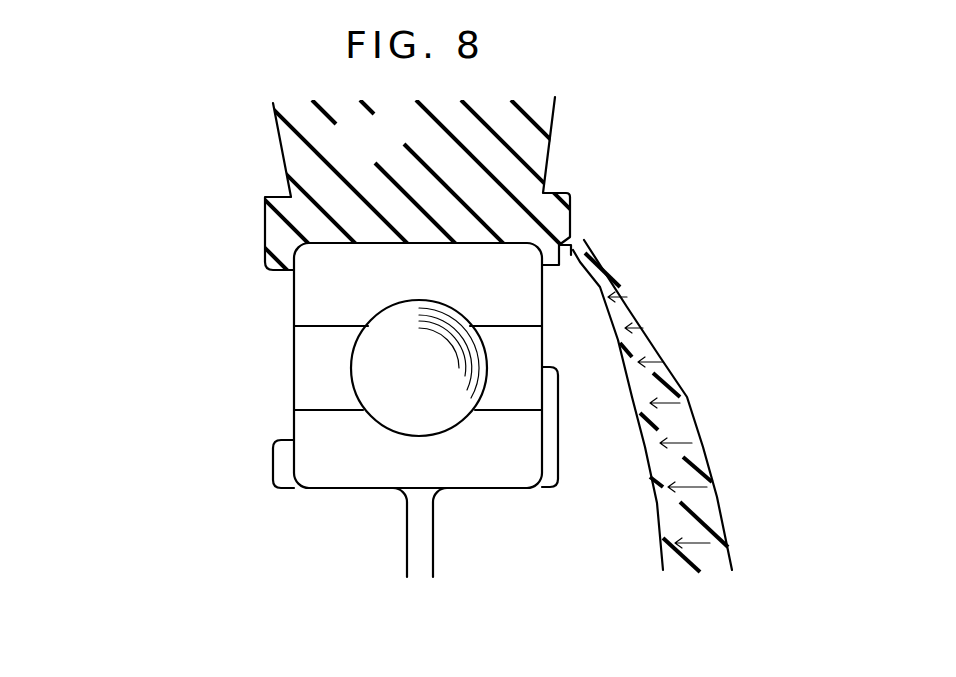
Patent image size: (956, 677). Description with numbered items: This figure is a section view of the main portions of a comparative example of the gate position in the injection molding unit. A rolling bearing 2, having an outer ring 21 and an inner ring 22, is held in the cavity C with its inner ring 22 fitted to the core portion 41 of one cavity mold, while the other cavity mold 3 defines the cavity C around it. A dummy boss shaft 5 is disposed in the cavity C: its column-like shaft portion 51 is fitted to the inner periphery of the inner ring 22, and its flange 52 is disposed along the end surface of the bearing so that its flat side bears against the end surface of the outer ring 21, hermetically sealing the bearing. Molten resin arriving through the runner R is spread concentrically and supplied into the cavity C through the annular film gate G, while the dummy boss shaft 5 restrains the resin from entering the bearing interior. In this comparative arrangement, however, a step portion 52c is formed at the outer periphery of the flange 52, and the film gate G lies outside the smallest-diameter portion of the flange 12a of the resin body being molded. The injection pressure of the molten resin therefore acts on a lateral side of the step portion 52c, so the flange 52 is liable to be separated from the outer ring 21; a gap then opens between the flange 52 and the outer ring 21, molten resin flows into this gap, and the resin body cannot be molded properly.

The rolling bearing 2 is at (372, 460).
The outer ring 21 is at (330, 292).
The inner ring 22 is at (327, 442).
The cavity mold 3 is at (659, 162).
The core portion 41 is at (395, 540).
The dummy boss shaft 5 is at (562, 523).
The shaft portion 51 is at (455, 542).
The flange 52 is at (592, 327).
The step portion 52c is at (580, 258).
The flange of the resin body 12a is at (553, 255).
The cavity C is at (385, 145).
The film gate G is at (577, 237).
The runner R is at (708, 505).